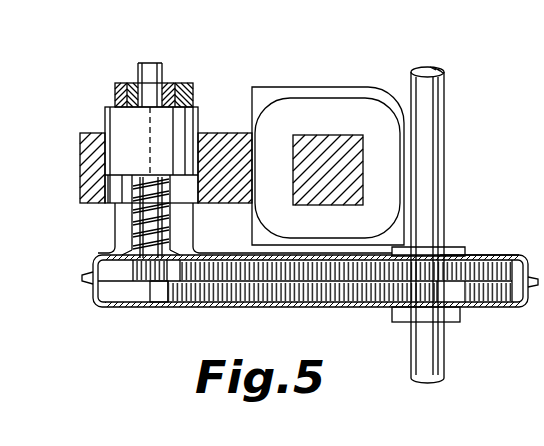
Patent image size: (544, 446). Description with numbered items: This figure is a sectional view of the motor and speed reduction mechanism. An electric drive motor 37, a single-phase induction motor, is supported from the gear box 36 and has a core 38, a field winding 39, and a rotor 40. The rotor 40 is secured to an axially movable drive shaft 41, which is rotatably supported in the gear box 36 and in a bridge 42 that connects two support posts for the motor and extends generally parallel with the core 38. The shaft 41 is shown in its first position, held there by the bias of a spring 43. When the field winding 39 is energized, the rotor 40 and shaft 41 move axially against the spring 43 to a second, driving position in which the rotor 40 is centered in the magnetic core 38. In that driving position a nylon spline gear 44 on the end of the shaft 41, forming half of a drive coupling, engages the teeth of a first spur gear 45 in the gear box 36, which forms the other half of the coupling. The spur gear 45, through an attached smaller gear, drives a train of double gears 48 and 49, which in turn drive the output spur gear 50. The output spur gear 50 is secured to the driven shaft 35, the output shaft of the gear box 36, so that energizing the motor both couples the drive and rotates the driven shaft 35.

The driven shaft 35 is at (435, 138).
The gear box 36 is at (127, 308).
The electric drive motor 37 is at (371, 85).
The core 38 is at (225, 137).
The field winding 39 is at (313, 105).
The rotor 40 is at (110, 118).
The drive shaft 41 is at (160, 63).
The bridge 42 is at (121, 83).
The spring 43 is at (132, 222).
The nylon spline gear 44 is at (148, 291).
The first spur gear 45 is at (203, 293).
The double gear 48 is at (280, 303).
The double gear 49 is at (340, 303).
The output spur gear 50 is at (495, 258).